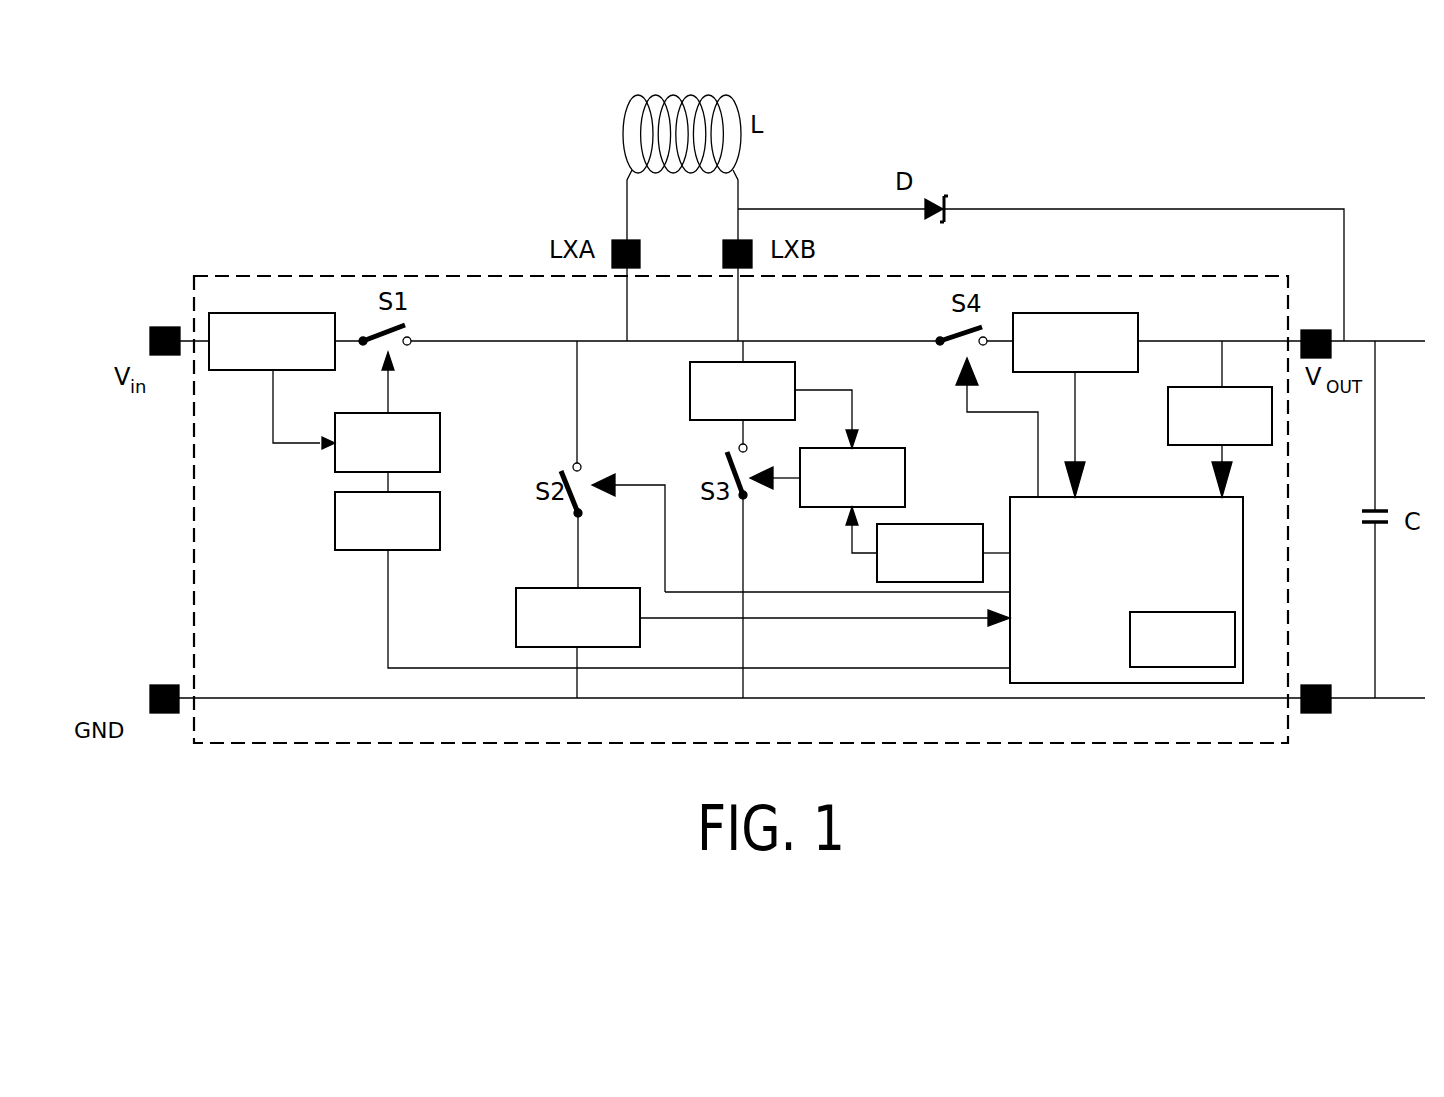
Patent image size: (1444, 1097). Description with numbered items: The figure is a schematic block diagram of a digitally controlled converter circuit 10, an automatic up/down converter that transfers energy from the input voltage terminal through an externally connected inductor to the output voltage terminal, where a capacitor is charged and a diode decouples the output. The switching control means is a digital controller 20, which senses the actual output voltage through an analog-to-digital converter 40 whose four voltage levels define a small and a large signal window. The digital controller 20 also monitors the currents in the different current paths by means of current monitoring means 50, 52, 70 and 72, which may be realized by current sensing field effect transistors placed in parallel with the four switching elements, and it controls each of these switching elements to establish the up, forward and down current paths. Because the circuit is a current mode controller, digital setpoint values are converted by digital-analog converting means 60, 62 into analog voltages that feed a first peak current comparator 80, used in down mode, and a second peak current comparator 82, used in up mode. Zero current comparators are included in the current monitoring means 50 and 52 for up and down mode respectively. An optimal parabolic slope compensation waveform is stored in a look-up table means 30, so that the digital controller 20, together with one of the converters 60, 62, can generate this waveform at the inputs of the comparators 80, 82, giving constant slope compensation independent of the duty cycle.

The converter circuit 10 is at (194, 612).
The digital controller 20 is at (1122, 497).
The look-up table means 30 is at (1130, 642).
The analog-to-digital converter 40 is at (1263, 446).
The current monitoring means 50 is at (1138, 320).
The current monitoring means 52 is at (516, 619).
The digital-analog converting means 60 is at (440, 520).
The digital-analog converting means 62 is at (877, 578).
The current monitoring means 70 is at (240, 372).
The current monitoring means 72 is at (690, 392).
The first peak current comparator 80 is at (440, 440).
The second peak current comparator 82 is at (905, 478).